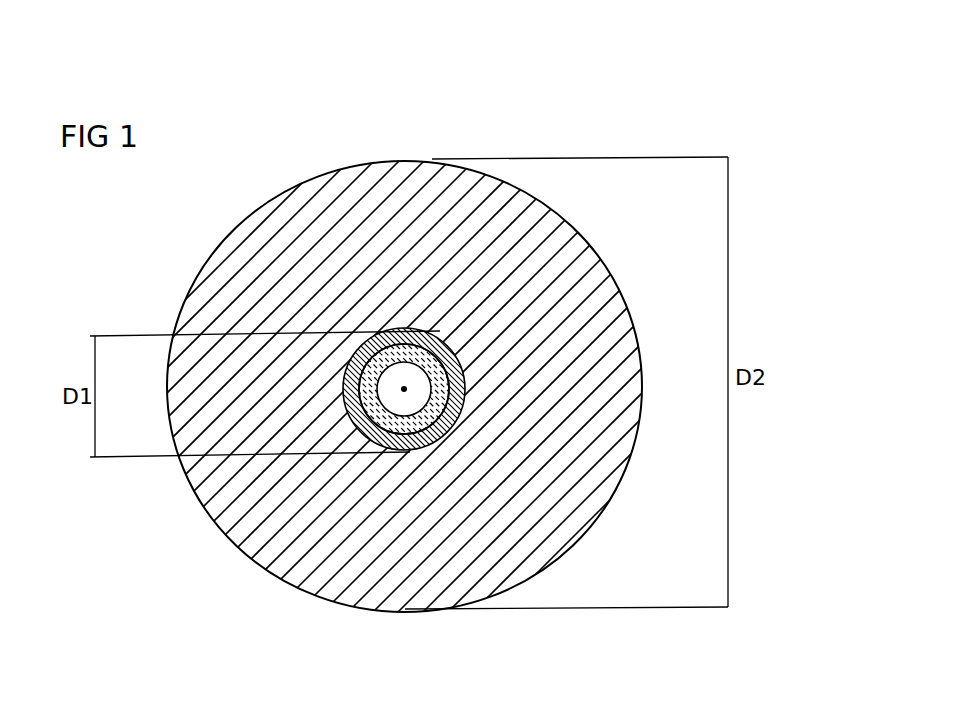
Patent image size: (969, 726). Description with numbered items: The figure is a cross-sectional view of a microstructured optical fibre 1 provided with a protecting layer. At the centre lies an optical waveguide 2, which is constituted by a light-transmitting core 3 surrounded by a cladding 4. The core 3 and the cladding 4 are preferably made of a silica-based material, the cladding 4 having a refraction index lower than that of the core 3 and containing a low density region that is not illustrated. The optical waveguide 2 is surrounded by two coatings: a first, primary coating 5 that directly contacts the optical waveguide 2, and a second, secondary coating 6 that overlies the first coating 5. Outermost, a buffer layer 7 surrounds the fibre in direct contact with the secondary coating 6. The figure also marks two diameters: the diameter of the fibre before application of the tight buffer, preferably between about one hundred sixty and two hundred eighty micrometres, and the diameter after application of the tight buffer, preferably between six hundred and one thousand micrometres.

The microstructured optical fibre 1 is at (316, 174).
The optical waveguide 2 is at (378, 392).
The core 3 is at (400, 432).
The cladding 4 is at (404, 389).
The first coating 5 is at (443, 343).
The second coating 6 is at (458, 355).
The buffer layer 7 is at (592, 524).